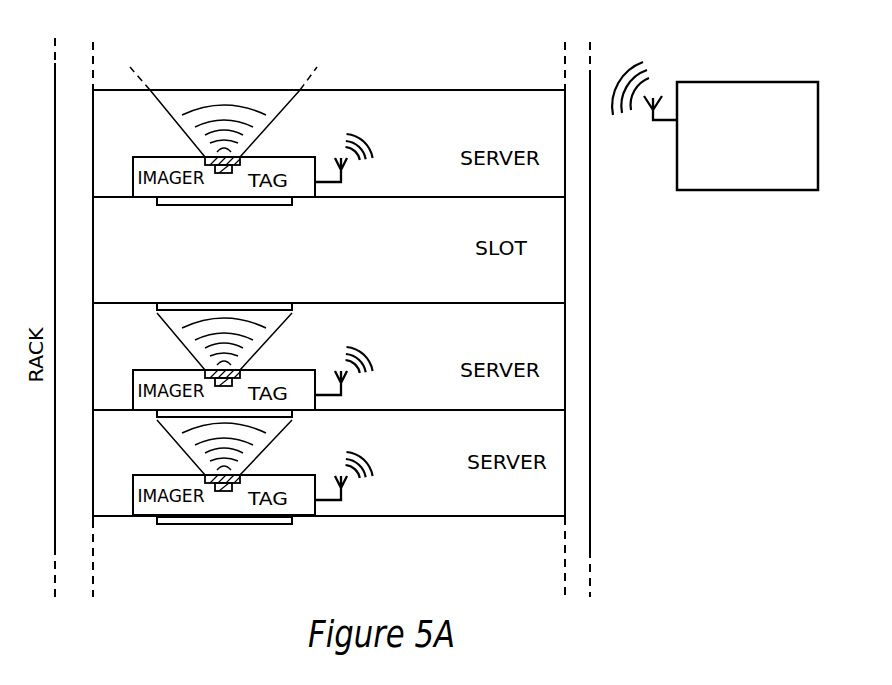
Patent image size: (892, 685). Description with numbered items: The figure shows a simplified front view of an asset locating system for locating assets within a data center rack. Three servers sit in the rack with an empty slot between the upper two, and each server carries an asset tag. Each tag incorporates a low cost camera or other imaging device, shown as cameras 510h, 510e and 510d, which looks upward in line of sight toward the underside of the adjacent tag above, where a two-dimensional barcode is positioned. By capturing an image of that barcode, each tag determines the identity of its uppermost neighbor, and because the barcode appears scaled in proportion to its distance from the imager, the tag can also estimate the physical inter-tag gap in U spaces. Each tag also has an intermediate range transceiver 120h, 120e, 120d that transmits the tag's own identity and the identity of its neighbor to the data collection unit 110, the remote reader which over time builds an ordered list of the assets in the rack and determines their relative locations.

The camera 510h is at (206, 156).
The camera 510e is at (207, 368).
The camera 510d is at (206, 474).
The intermediate range transceiver 120h is at (372, 165).
The intermediate range transceiver 120e is at (372, 378).
The intermediate range transceiver 120d is at (372, 483).
The data collection unit 110 is at (730, 178).